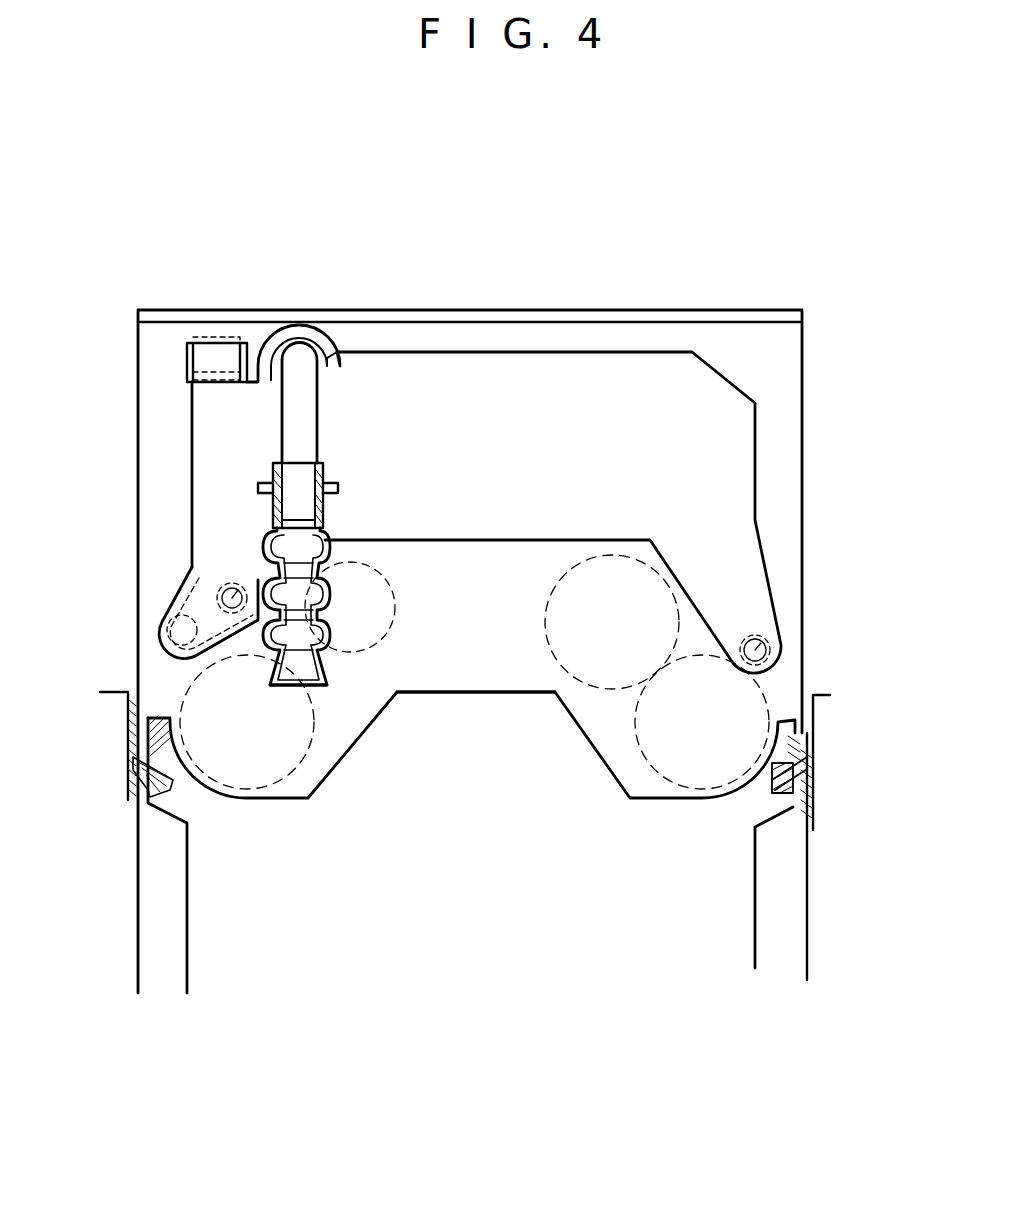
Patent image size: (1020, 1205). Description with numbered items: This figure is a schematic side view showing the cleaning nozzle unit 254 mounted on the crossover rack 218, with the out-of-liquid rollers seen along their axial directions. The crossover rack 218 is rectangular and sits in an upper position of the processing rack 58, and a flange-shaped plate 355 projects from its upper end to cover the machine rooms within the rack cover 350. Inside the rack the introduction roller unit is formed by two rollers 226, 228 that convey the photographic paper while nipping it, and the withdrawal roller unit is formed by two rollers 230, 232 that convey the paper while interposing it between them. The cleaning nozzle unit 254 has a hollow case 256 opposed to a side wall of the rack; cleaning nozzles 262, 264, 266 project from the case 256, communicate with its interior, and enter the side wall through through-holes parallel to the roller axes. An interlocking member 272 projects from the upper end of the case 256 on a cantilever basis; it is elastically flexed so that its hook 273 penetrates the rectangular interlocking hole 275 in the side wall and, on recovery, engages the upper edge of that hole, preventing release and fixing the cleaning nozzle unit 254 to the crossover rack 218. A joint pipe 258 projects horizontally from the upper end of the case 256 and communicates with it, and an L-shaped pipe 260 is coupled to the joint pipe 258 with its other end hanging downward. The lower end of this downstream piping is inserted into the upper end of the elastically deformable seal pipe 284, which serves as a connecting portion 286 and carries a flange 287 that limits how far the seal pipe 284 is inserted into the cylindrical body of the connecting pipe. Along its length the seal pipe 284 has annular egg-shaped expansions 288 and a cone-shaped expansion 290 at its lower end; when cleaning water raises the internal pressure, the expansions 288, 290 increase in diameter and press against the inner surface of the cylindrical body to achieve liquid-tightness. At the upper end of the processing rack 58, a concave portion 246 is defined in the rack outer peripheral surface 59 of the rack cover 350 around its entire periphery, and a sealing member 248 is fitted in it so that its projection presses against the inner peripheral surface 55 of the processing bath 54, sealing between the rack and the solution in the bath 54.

The crossover rack 218 is at (588, 310).
The flange-shaped plate 355 is at (497, 309).
The case 256 is at (652, 372).
The joint pipe 258 is at (327, 343).
The L-shaped pipe 260 is at (318, 405).
The connecting portion 286 is at (300, 463).
The flange 287 is at (332, 487).
The seal pipe 284 is at (365, 584).
The expansions 288 is at (312, 560).
The expansion 290 is at (323, 667).
The interlocking member 272 is at (222, 385).
The interlocking hole 275 is at (198, 367).
The hook 273 is at (236, 334).
The cleaning nozzle 262 is at (163, 618).
The cleaning nozzle 264 is at (222, 585).
The cleaning nozzle 266 is at (770, 640).
The roller 230 is at (358, 652).
The roller 226 is at (572, 690).
The roller 228 is at (673, 753).
The roller 232 is at (280, 770).
The cleaning nozzle unit 254 is at (462, 730).
The processing rack 58 is at (188, 955).
The rack outer peripheral surface 59 is at (820, 750).
The rack cover 350 is at (794, 732).
The sealing member 248 is at (797, 787).
The concave portion 246 is at (783, 820).
The inner peripheral surface 55 is at (807, 853).
The processing bath 54 is at (795, 910).